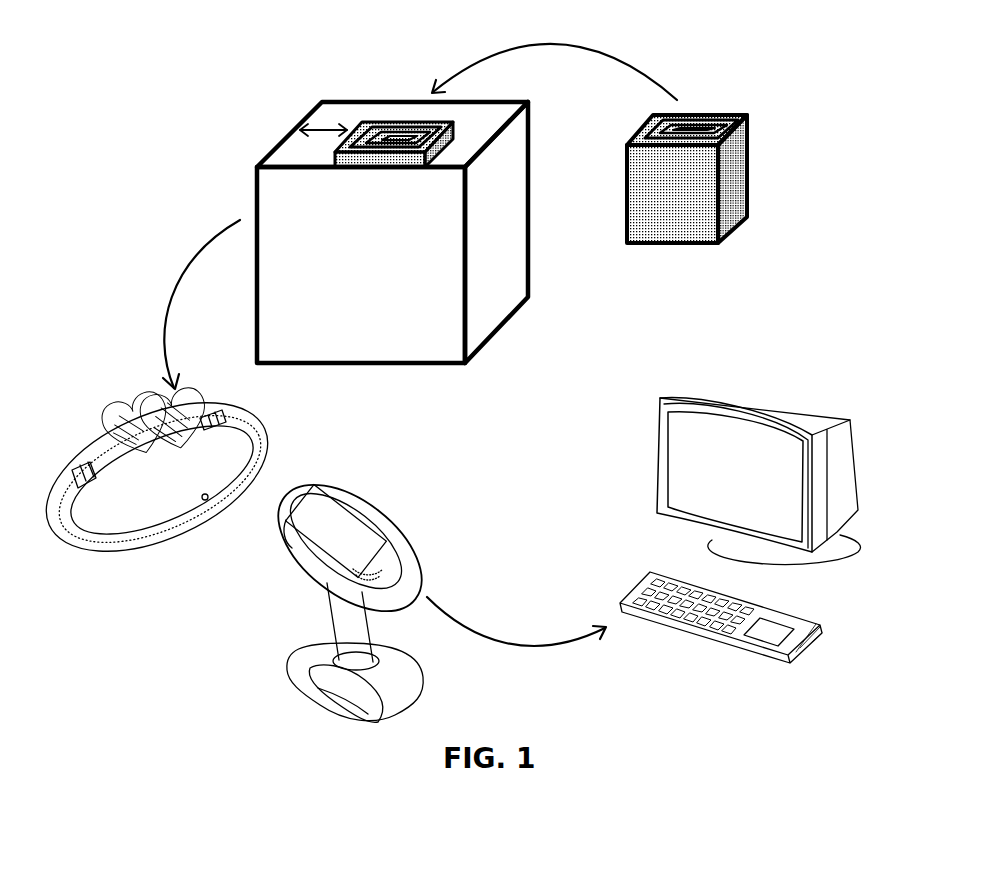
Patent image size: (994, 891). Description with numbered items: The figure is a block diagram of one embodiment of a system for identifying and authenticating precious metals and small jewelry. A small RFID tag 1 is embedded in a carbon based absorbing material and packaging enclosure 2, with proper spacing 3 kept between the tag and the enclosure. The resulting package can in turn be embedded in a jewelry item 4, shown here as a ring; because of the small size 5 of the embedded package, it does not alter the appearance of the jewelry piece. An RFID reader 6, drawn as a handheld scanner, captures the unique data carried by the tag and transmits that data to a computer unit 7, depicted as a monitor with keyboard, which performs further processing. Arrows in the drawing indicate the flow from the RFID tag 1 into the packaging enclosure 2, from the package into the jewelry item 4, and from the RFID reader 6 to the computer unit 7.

The RFID tag 1 is at (728, 242).
The packaging enclosure 2 is at (502, 335).
The spacing 3 is at (327, 123).
The jewelry item 4 is at (280, 417).
The small size 5 is at (203, 502).
The RFID reader 6 is at (396, 522).
The computer unit 7 is at (738, 377).